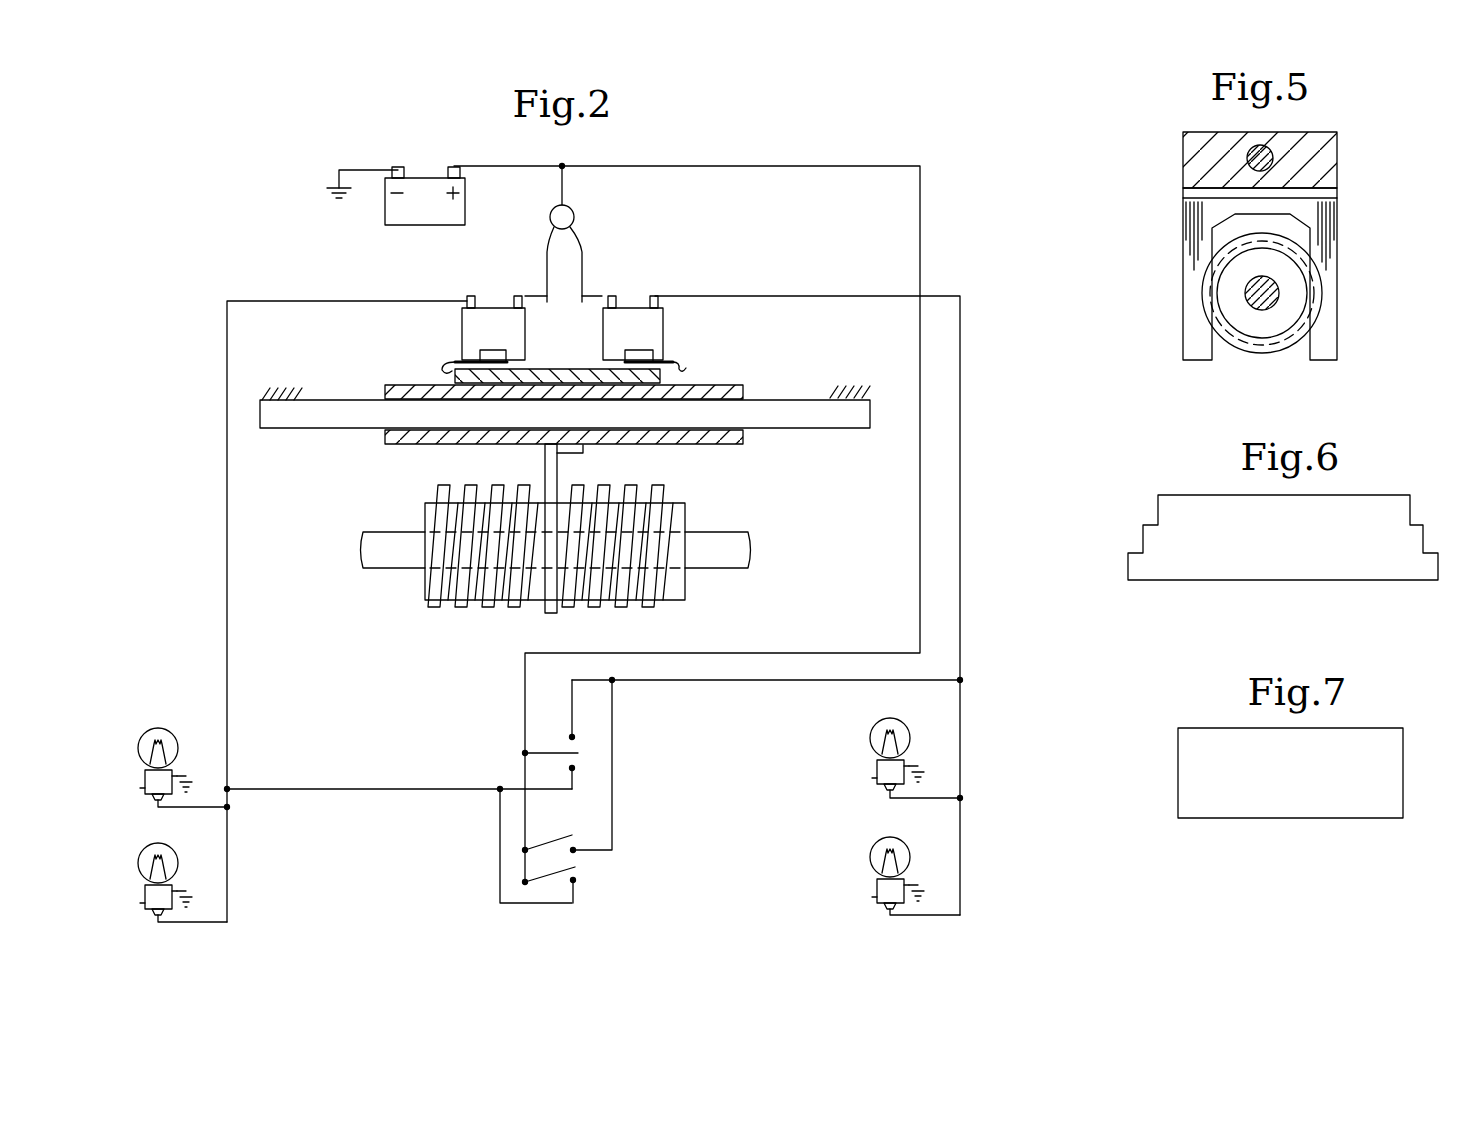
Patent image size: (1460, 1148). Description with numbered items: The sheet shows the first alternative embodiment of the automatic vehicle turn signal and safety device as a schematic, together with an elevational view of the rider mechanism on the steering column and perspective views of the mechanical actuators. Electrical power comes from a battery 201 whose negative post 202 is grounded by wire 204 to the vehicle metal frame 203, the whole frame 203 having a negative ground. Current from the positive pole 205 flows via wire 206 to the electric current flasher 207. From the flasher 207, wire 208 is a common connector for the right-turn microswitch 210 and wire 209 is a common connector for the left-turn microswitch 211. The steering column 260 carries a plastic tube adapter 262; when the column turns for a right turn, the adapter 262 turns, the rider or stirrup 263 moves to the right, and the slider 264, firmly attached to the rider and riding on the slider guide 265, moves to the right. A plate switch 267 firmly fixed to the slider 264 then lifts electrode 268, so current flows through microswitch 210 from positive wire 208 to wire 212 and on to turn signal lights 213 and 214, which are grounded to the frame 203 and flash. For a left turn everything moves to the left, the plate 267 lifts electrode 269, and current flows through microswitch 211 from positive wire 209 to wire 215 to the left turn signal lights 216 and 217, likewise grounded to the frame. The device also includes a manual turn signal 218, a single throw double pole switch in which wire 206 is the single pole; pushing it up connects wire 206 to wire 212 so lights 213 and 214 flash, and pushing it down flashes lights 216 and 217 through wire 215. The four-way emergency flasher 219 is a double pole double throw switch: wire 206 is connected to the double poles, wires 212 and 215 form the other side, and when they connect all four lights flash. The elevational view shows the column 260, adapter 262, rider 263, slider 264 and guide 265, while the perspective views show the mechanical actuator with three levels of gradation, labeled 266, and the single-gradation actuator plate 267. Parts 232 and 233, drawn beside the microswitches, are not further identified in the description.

In FIG. 2, the battery 201 is at (425, 201).
In FIG. 2, the negative post 202 is at (398, 166).
In FIG. 2, the vehicle metal frame 203 is at (333, 187).
In FIG. 2, the wire 204 is at (354, 166).
In FIG. 2, the positive pole 205 is at (454, 166).
In FIG. 2, the wire 206 is at (613, 166).
In FIG. 2, the electric current flasher 207 is at (575, 217).
In FIG. 2, the wire 208 is at (583, 262).
In FIG. 2, the wire 209 is at (547, 262).
In FIG. 2, the microswitch 210 is at (633, 329).
In FIG. 2, the microswitch 211 is at (493, 329).
In FIG. 2, the wire 212 is at (766, 296).
In FIG. 2, the turn signal light 213 is at (885, 721).
In FIG. 2, the turn signal light 214 is at (885, 840).
In FIG. 2, the wire 215 is at (388, 300).
In FIG. 2, the left turn signal light 216 is at (155, 727).
In FIG. 2, the left turn signal light 217 is at (155, 843).
In FIG. 2, the manual turn signal 218 is at (558, 737).
In FIG. 2, the four-way emergency flasher 219 is at (558, 829).
In FIG. 2, the solenoid plunger 232 is at (605, 302).
In FIG. 2, the solenoid plunger 233 is at (527, 303).
In FIG. 2, the steering column 260 is at (722, 532).
In FIG. 5, the steering column 260 is at (1248, 289).
In FIG. 2, the plastic tube adapter 262 is at (458, 487).
In FIG. 5, the plastic tube adapter 262 is at (1254, 352).
In FIG. 2, the rider mechanism 263 is at (545, 470).
In FIG. 5, the rider mechanism 263 is at (1322, 232).
In FIG. 2, the slider 264 is at (745, 392).
In FIG. 5, the slider 264 is at (1200, 168).
In FIG. 2, the slider guide 265 is at (773, 428).
In FIG. 5, the slider guide 265 is at (1258, 146).
In FIG. 6, the contact strip 266 is at (1283, 537).
In FIG. 2, the plate switch 267 is at (582, 370).
In FIG. 7, the plate switch 267 is at (1290, 773).
In FIG. 2, the electrode 268 is at (682, 365).
In FIG. 2, the electrode 269 is at (443, 364).